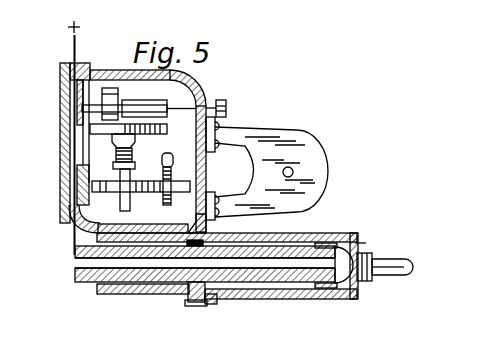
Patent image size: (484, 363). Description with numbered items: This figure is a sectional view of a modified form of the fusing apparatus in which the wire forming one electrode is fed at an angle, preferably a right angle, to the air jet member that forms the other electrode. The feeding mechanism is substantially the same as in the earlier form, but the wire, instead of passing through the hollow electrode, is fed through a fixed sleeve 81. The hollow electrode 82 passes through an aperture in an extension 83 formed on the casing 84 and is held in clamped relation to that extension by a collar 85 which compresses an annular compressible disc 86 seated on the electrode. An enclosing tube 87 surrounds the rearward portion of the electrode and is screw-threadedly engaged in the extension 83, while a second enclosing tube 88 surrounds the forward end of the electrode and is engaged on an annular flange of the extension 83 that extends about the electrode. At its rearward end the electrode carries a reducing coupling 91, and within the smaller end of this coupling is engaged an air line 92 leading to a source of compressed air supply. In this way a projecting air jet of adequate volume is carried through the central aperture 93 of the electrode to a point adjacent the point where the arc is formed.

The fixed sleeve 81 is at (67, 218).
The hollow electrode 82 is at (86, 281).
The extension 83 is at (188, 300).
The casing 84 is at (194, 82).
The collar 85 is at (216, 302).
The annular compressible disc 86 is at (195, 306).
The enclosing tube 87 is at (300, 236).
The enclosing tube 88 is at (130, 294).
The reducing coupling 91 is at (360, 286).
The air line 92 is at (386, 259).
The central aperture 93 is at (80, 263).